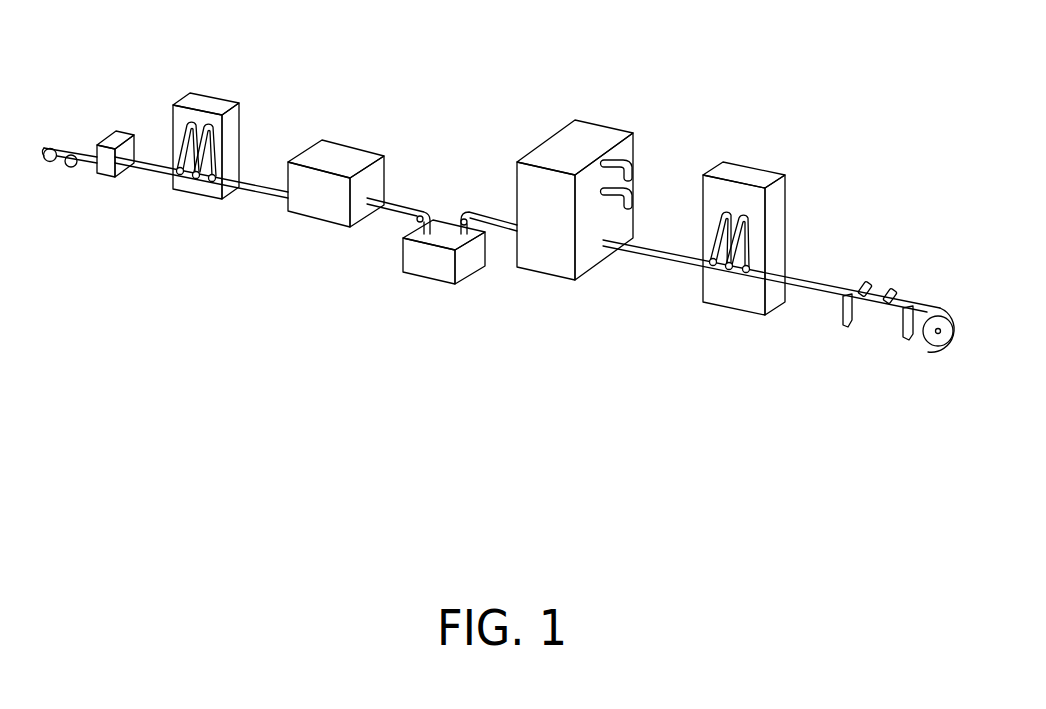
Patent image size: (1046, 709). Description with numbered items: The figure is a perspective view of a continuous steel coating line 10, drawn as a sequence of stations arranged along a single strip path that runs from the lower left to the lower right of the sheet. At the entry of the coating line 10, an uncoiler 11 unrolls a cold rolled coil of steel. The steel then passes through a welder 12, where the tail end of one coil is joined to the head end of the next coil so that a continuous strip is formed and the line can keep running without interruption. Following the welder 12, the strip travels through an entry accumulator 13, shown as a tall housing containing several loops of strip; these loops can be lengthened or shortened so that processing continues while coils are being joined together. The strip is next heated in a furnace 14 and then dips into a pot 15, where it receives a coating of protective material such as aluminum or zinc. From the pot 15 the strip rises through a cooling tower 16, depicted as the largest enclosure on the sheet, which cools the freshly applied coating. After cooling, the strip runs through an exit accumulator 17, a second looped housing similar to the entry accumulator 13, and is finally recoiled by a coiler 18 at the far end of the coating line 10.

The continuous steel coating line 10 is at (465, 87).
The uncoiler 11 is at (61, 163).
The welder 12 is at (113, 138).
The entry accumulator 13 is at (209, 105).
The furnace 14 is at (337, 161).
The pot 15 is at (423, 268).
The cooling tower 16 is at (602, 137).
The exit accumulator 17 is at (758, 177).
The coiler 18 is at (933, 345).